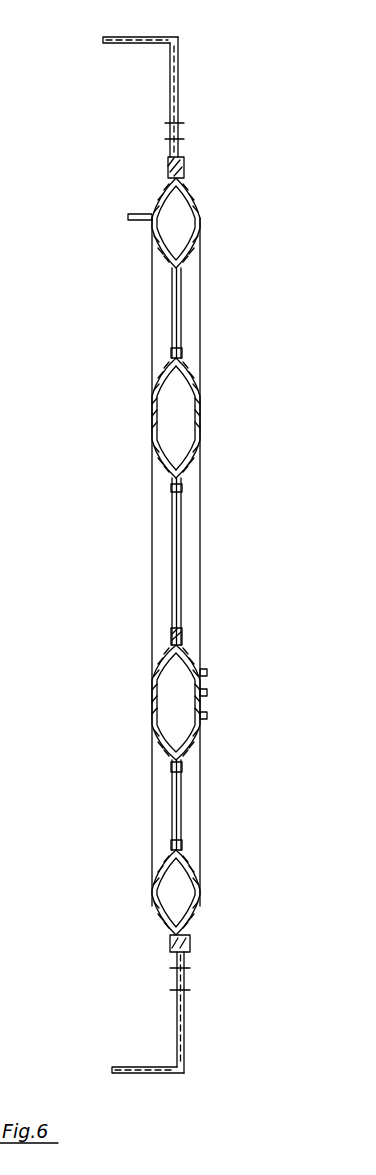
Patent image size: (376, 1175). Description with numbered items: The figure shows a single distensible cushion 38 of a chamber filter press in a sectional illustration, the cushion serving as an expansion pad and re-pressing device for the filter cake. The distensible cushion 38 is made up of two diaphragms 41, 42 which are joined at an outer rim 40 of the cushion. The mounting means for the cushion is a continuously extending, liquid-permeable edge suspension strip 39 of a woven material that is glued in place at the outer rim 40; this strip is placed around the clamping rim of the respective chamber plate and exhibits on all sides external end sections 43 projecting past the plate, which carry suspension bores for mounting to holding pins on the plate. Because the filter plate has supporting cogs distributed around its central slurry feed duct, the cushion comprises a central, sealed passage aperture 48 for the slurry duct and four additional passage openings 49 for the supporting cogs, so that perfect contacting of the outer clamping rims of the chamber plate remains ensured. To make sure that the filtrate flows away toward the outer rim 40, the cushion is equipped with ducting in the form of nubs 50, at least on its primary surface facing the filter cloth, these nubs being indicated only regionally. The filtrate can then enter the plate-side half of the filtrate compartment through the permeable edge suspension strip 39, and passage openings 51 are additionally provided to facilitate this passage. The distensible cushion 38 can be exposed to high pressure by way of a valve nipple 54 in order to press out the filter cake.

The distensible cushion 38 is at (143, 400).
The edge suspension strip 39 is at (170, 76).
The outer rim 40 is at (169, 160).
The diaphragm 41 is at (151, 432).
The diaphragm 42 is at (200, 430).
The end sections 43 is at (128, 37).
The passage aperture 48 is at (172, 490).
The passage openings 49 is at (172, 282).
The nubs 50 is at (209, 671).
The passage openings 51 is at (180, 123).
The valve nipple 54 is at (140, 214).